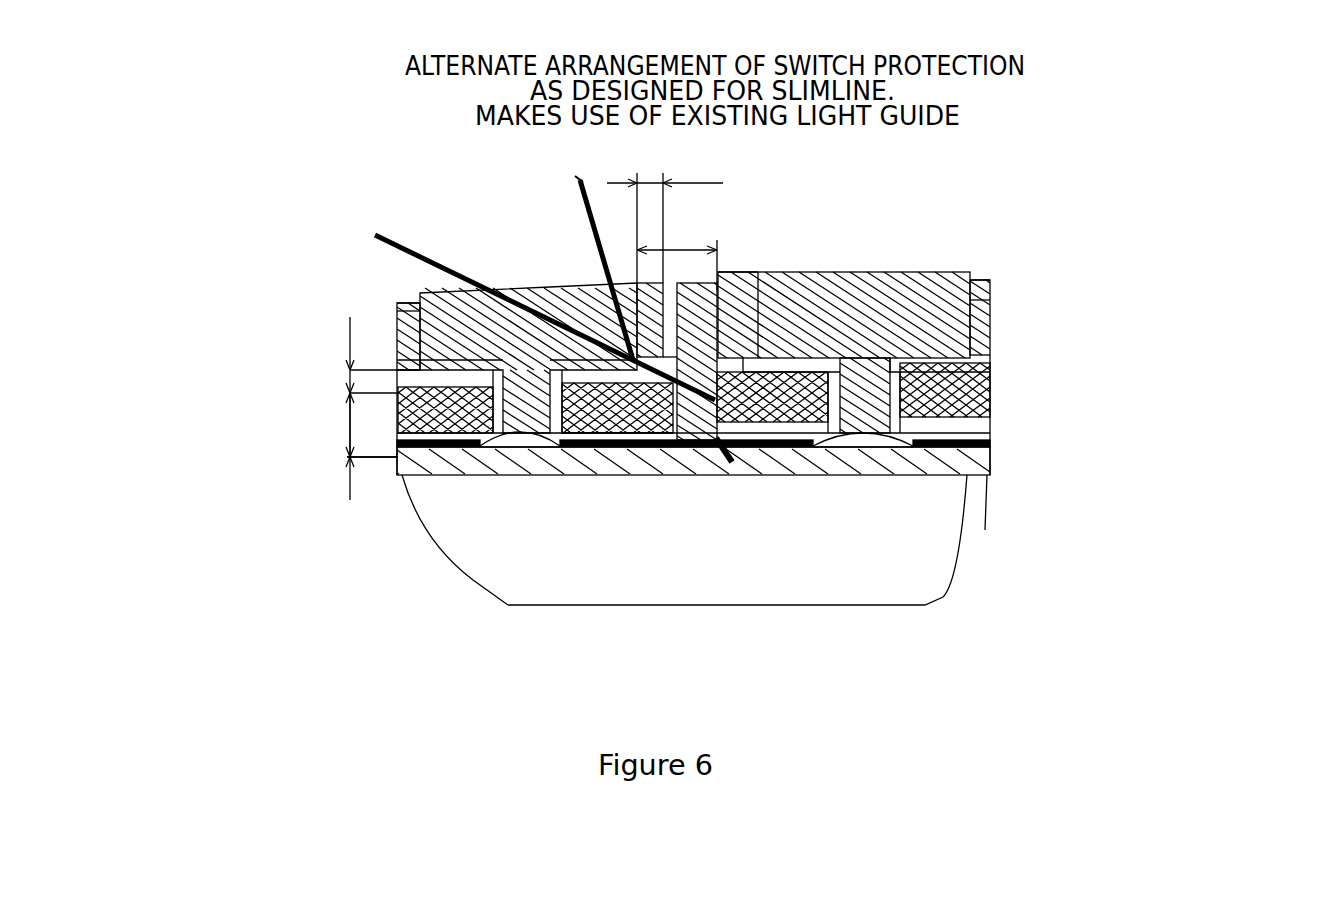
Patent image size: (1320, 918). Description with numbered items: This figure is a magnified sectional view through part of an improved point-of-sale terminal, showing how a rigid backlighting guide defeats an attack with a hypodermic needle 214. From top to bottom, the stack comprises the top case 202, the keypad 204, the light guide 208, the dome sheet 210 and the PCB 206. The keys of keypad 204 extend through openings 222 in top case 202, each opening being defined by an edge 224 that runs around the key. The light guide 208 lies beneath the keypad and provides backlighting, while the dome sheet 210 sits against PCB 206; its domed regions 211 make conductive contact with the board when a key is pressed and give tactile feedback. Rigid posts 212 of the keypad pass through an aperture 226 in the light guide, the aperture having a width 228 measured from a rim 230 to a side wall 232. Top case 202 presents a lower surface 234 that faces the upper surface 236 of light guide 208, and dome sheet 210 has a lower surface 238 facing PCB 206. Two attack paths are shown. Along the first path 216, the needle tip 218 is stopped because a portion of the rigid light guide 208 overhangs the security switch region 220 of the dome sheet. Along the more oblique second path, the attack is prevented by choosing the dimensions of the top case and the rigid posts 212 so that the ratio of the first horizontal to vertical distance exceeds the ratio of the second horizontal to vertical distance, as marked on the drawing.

The top case 202 is at (732, 283).
The keypad 204 is at (955, 265).
The PCB 206 is at (915, 478).
The light guide 208 is at (522, 637).
The dome sheet 210 is at (962, 460).
The domed regions 211 is at (515, 473).
The rigid posts 212 is at (637, 473).
The hypodermic needle 214 is at (330, 262).
The attack path 216 is at (575, 180).
The tip 218 is at (600, 377).
The security switch region 220 is at (680, 450).
The openings 222 is at (420, 290).
The edge 224 is at (633, 207).
The aperture 226 is at (730, 460).
The width 228 is at (722, 268).
The rim 230 is at (663, 223).
The side wall 232 is at (722, 270).
The lower surface 234 is at (350, 370).
The upper surface 236 is at (347, 397).
The lower surface 238 is at (347, 460).